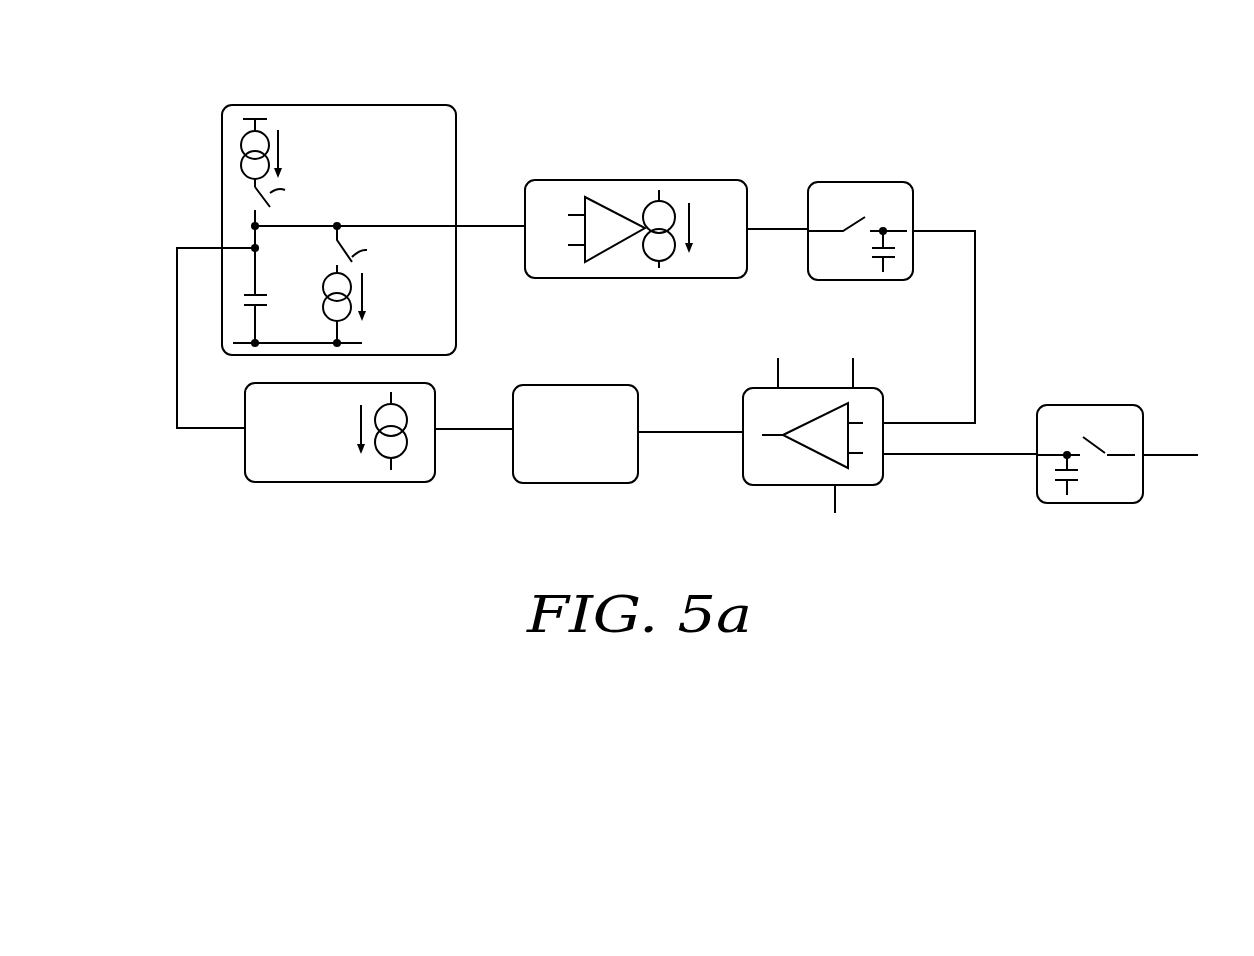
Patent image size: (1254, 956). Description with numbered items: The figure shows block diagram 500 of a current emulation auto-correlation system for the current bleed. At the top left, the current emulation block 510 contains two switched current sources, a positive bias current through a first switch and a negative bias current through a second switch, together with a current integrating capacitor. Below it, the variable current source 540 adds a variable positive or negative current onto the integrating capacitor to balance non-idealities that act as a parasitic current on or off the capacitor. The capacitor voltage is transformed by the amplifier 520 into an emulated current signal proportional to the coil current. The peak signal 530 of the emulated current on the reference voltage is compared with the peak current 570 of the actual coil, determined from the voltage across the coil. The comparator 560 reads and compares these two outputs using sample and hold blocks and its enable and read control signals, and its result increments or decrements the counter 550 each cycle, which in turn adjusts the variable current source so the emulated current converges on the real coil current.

The block diagram 500 is at (568, 45).
The current emulation block 510 is at (308, 105).
The AMP1 520 is at (640, 180).
The peak signal 530 is at (860, 182).
The variable current source 540 is at (385, 482).
The counter 550 is at (578, 483).
The comparator 560 is at (778, 486).
The peak current 570 is at (1108, 503).